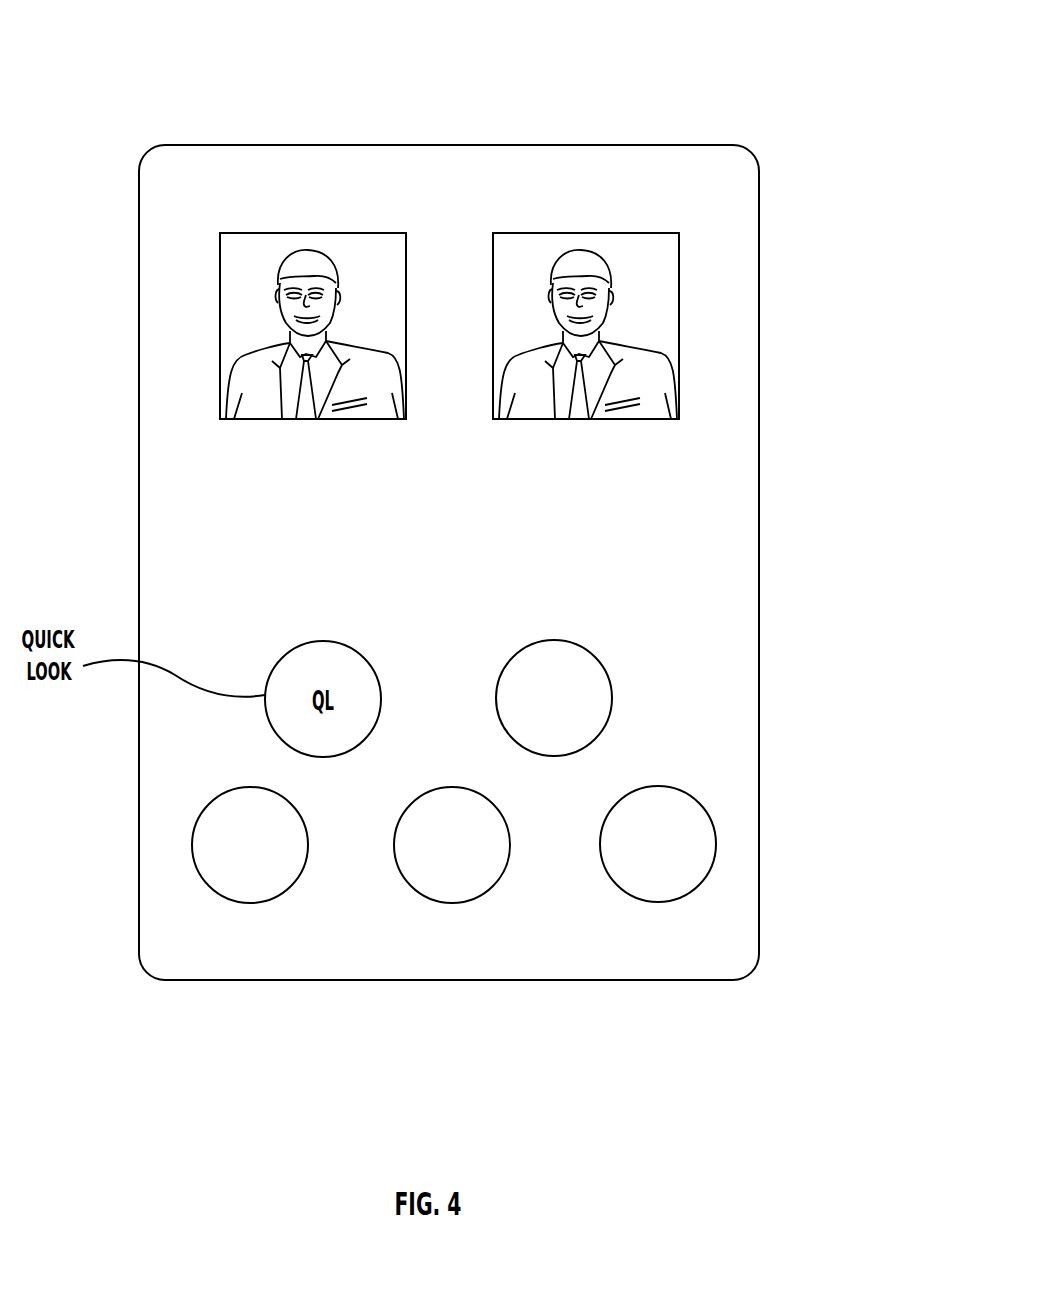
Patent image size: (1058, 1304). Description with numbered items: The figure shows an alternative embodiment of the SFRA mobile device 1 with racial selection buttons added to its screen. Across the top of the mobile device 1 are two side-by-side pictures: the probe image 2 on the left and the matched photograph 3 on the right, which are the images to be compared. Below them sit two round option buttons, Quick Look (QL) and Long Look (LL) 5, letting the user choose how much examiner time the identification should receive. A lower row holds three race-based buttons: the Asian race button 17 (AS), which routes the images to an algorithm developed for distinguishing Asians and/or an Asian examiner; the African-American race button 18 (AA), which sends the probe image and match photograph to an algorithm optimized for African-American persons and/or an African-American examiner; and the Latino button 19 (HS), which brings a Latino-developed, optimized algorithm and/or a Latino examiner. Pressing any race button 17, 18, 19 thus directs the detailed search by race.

The mobile device 1 is at (415, 172).
The probe image 2 is at (270, 233).
The matched photograph 3 is at (665, 232).
The Long Look button 5 is at (605, 670).
The Asian race button 17 is at (234, 887).
The African-American race button 18 is at (478, 887).
The Latino race button 19 is at (715, 798).